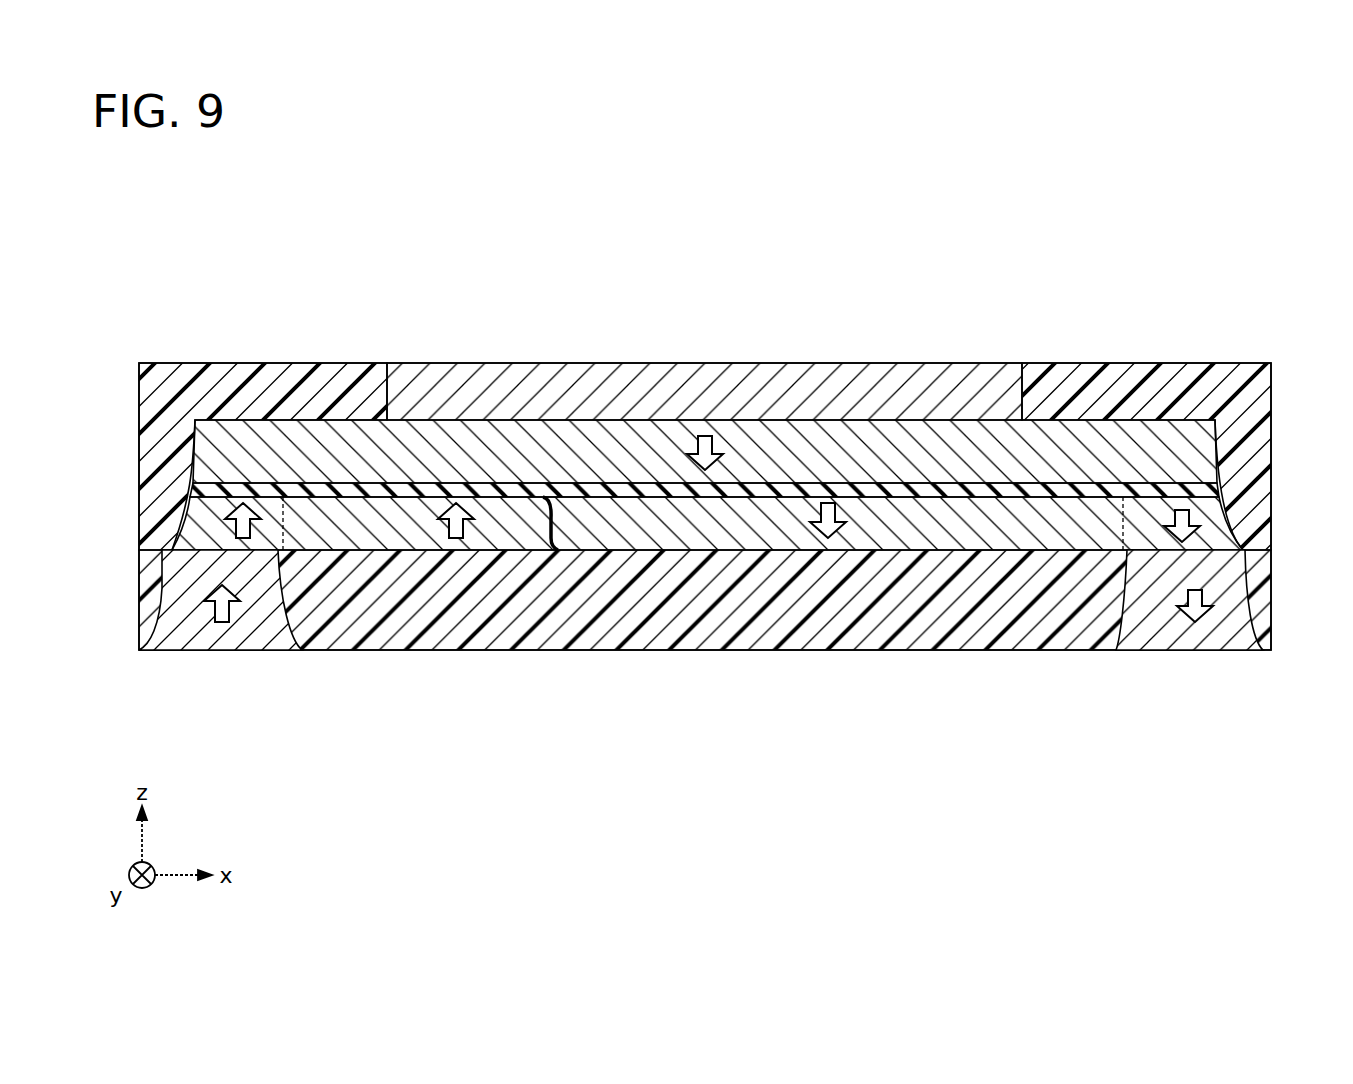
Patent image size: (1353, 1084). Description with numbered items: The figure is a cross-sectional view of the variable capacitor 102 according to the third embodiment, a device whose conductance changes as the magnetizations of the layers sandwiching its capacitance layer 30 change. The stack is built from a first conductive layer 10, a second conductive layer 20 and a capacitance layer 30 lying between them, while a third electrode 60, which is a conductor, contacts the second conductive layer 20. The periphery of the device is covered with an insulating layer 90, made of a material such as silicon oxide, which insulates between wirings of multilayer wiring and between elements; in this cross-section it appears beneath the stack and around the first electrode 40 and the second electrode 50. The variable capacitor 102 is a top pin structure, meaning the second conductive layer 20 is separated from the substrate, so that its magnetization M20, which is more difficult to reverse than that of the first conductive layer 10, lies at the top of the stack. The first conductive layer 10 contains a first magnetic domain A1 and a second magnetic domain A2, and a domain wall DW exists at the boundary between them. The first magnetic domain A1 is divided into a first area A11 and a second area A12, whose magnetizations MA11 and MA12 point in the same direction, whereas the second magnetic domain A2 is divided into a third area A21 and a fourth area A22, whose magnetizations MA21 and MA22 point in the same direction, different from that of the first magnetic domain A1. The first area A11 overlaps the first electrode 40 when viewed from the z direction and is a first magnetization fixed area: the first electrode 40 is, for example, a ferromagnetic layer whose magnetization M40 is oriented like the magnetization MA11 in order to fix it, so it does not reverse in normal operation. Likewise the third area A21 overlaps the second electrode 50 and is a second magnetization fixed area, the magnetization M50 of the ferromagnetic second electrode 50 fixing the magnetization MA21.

The variable capacitor 102 is at (1157, 227).
The first conductive layer 10 is at (1217, 527).
The second conductive layer 20 is at (1207, 453).
The capacitance layer 30 is at (1207, 486).
The first electrode 40 is at (170, 606).
The second electrode 50 is at (1240, 583).
The third electrode 60 is at (917, 372).
The insulating layer 90 is at (921, 648).
The domain wall DW is at (568, 532).
The first area A11 is at (270, 546).
The second area A12 is at (323, 546).
The first magnetic domain A1 is at (345, 712).
The third area A21 is at (1147, 544).
The fourth area A22 is at (1097, 544).
The second magnetic domain A2 is at (1148, 712).
The magnetization of the first area MA11 is at (240, 518).
The magnetization of the first electrode M40 is at (221, 620).
The magnetization of the second area MA12 is at (456, 532).
The magnetization of the second conductive layer M20 is at (704, 444).
The magnetization of the fourth area MA22 is at (828, 522).
The magnetization of the third area MA21 is at (1182, 530).
The magnetization of the second electrode M50 is at (1197, 606).